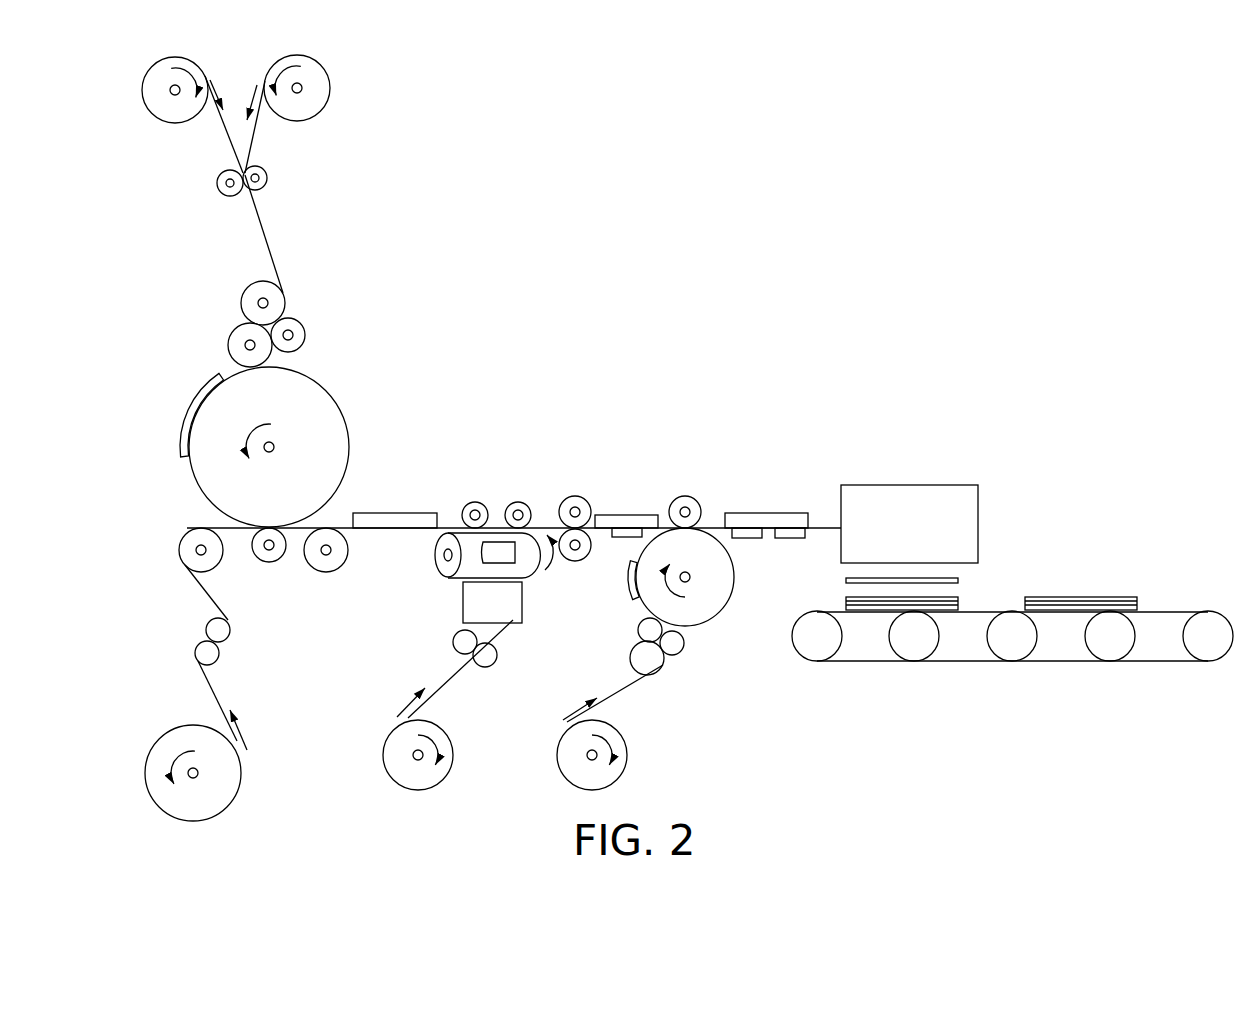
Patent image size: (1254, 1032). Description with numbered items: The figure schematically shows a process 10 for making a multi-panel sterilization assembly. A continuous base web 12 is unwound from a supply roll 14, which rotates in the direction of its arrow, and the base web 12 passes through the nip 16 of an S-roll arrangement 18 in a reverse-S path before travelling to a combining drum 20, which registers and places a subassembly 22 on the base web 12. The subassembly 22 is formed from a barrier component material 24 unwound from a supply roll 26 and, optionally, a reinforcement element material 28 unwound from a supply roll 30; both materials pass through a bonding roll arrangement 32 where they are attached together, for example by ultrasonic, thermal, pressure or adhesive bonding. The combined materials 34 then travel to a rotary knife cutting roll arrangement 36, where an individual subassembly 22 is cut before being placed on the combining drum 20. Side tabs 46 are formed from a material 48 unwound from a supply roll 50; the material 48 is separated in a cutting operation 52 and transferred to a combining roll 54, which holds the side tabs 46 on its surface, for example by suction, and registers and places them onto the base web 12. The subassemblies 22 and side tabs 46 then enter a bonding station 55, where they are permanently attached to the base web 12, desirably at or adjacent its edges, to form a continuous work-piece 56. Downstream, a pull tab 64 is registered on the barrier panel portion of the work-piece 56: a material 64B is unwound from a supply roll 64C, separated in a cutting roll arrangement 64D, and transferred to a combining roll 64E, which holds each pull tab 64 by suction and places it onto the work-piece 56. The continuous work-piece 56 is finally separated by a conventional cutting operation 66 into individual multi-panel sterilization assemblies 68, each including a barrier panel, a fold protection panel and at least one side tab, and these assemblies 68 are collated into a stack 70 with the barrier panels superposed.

The process 10 is at (640, 287).
The continuous base web 12 is at (208, 589).
The supply roll 14 is at (240, 793).
The nip 16 is at (192, 638).
The S-roll arrangement 18 is at (227, 655).
The combining drum 20 is at (343, 398).
The subassembly 22 is at (188, 412).
The barrier component material 24 is at (220, 131).
The supply roll 26 is at (143, 85).
The reinforcement element material 28 is at (257, 132).
The supply roll 30 is at (330, 85).
The bonding roll arrangement 32 is at (272, 192).
The combined materials 34 is at (267, 247).
The rotary knife cutting roll arrangement 36 is at (300, 312).
The side tab 46 is at (493, 555).
The material 48 is at (447, 680).
The supply roll 50 is at (450, 773).
The cutting operation 52 is at (481, 612).
The combining roll 54 is at (442, 556).
The bonding station 55 is at (573, 493).
The continuous work-piece 56 is at (645, 507).
The pull tab 64 is at (628, 590).
The material 64B is at (625, 695).
The supply roll 64C is at (628, 760).
The cutting roll arrangement 64D is at (672, 658).
The combining roll 64E is at (724, 609).
The cutting operation 66 is at (899, 526).
The multi-panel sterilization assembly 68 is at (963, 580).
The stack 70 is at (970, 598).